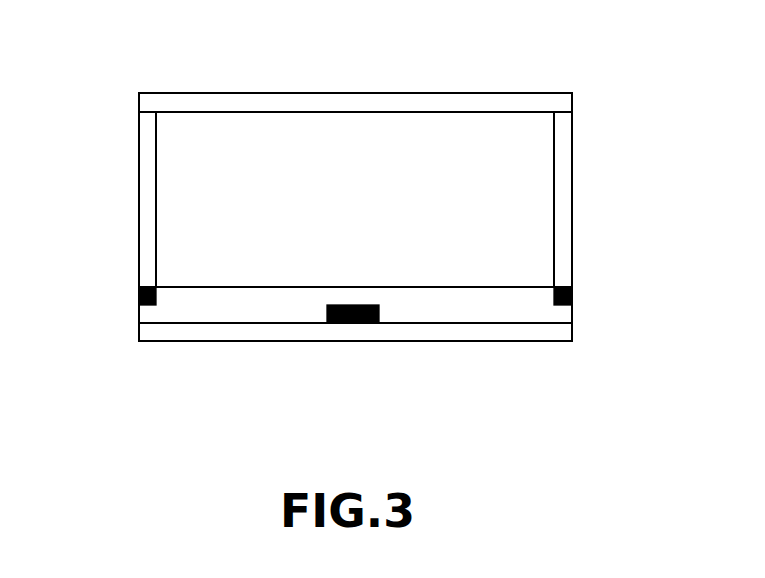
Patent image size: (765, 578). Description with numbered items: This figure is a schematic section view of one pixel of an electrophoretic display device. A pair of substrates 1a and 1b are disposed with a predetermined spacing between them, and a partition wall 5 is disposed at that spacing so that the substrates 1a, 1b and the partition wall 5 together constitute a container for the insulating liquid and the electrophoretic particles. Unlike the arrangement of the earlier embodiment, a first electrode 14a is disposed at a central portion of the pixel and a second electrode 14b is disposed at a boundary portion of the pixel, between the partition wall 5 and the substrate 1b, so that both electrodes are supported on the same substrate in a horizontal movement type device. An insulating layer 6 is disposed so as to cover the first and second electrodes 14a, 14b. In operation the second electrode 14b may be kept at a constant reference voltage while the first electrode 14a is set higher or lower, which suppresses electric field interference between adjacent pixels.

The substrate 1a is at (202, 103).
The substrate 1b is at (498, 335).
The partition wall 5 is at (148, 160).
The insulating layer 6 is at (275, 297).
The first electrode 14a is at (361, 315).
The second electrode 14b is at (139, 300).